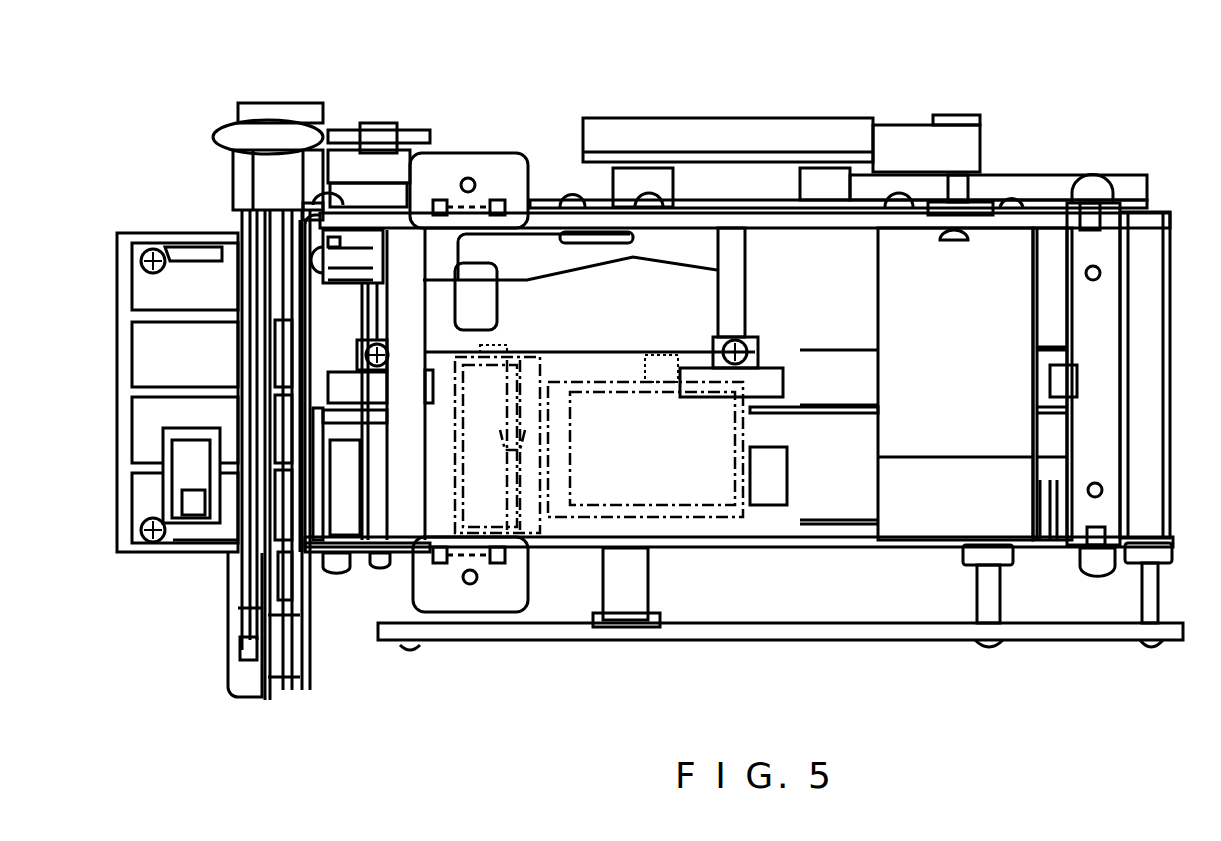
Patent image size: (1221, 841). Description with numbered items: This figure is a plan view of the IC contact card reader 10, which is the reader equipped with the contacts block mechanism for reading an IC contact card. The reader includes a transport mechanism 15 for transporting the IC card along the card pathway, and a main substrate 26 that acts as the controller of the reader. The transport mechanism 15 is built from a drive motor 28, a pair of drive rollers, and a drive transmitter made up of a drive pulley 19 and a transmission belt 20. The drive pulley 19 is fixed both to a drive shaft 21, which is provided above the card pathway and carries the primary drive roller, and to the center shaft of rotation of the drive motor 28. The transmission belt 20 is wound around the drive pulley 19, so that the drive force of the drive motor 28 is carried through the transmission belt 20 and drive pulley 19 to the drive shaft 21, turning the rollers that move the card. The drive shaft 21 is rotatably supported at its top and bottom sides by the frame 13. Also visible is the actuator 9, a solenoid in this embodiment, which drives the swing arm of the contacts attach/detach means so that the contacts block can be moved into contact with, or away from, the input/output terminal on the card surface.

The actuator 9 is at (680, 515).
The IC contact card reader 10 is at (1128, 120).
The frame 13 is at (547, 550).
The transport mechanism 15 is at (865, 115).
The drive pulley 19 is at (727, 118).
The transmission belt 20 is at (780, 116).
The drive shaft 21 is at (722, 312).
The main substrate 26 is at (765, 628).
The drive motor 28 is at (933, 440).